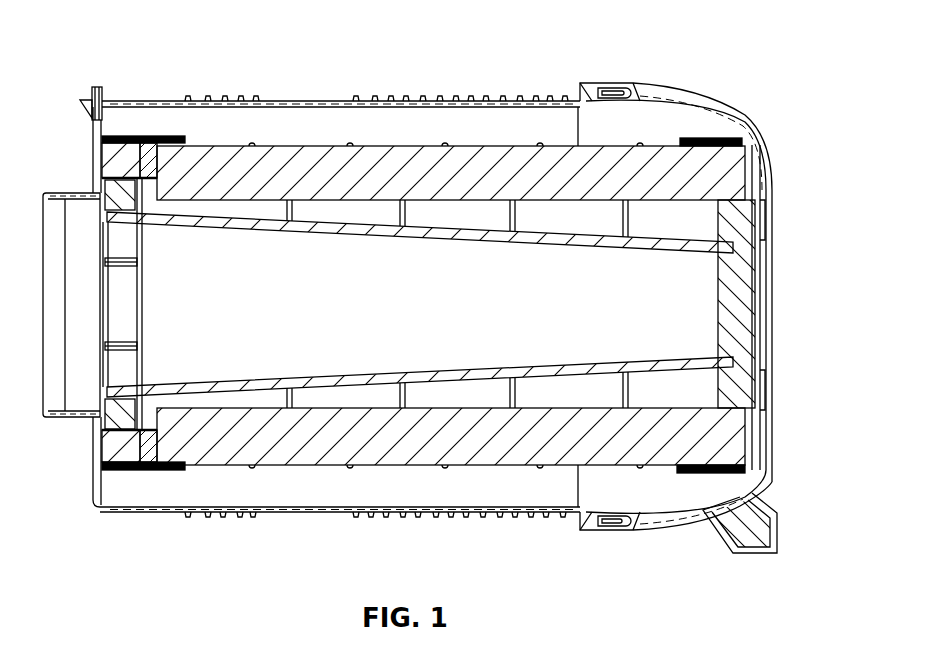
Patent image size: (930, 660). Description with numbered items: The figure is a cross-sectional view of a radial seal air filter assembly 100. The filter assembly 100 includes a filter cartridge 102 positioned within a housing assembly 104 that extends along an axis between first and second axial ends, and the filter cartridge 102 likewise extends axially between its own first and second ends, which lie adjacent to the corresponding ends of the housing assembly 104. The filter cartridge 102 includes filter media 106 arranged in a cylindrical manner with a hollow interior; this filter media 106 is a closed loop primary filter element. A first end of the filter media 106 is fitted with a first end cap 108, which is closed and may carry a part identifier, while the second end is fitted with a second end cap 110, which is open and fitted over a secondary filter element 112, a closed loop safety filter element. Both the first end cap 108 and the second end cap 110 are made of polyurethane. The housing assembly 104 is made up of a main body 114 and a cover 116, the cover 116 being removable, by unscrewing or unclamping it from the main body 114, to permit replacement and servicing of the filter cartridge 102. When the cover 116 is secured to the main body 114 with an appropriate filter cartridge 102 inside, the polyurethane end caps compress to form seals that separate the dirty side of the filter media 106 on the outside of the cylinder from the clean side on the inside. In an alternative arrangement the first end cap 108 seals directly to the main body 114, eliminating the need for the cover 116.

The radial seal air filter assembly 100 is at (110, 38).
The filter cartridge 102 is at (733, 182).
The housing assembly 104 is at (566, 82).
The filter media 106 is at (722, 428).
The first end cap 108 is at (750, 276).
The second end cap 110 is at (98, 192).
The secondary filter element 112 is at (210, 392).
The main body 114 is at (341, 100).
The cover 116 is at (656, 96).